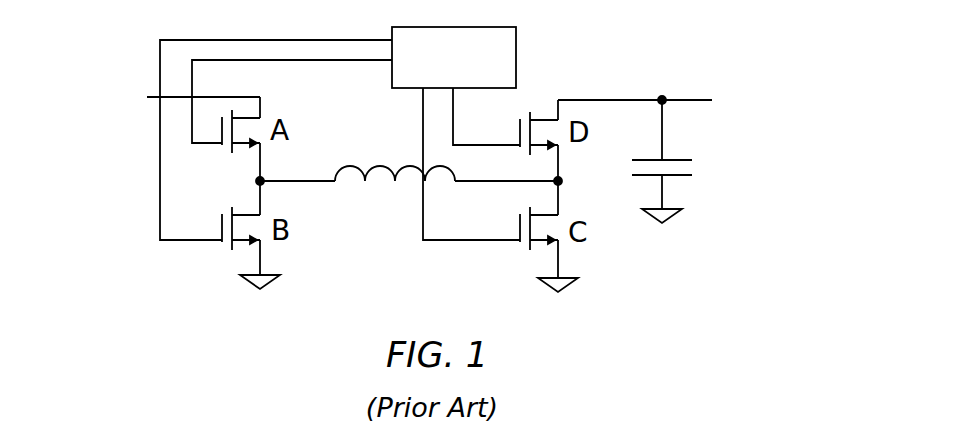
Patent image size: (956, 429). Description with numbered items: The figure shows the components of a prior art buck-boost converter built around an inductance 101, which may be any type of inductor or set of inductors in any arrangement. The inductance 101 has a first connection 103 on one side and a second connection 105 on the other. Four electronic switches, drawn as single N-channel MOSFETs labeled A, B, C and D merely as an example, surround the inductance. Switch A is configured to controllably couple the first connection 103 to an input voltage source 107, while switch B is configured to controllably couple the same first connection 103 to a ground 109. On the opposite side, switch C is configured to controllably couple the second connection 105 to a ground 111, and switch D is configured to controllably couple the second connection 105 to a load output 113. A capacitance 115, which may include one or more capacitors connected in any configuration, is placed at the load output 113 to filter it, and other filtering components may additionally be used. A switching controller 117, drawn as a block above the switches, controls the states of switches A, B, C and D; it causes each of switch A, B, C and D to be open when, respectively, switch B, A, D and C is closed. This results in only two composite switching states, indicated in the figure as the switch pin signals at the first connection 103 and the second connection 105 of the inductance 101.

The inductance 101 is at (382, 166).
The first connection 103 is at (293, 181).
The second connection 105 is at (506, 183).
The input voltage source 107 is at (152, 97).
The ground 109 is at (260, 287).
The ground 111 is at (568, 285).
The load output 113 is at (682, 98).
The capacitance 115 is at (672, 160).
The switch controller 117 is at (453, 27).